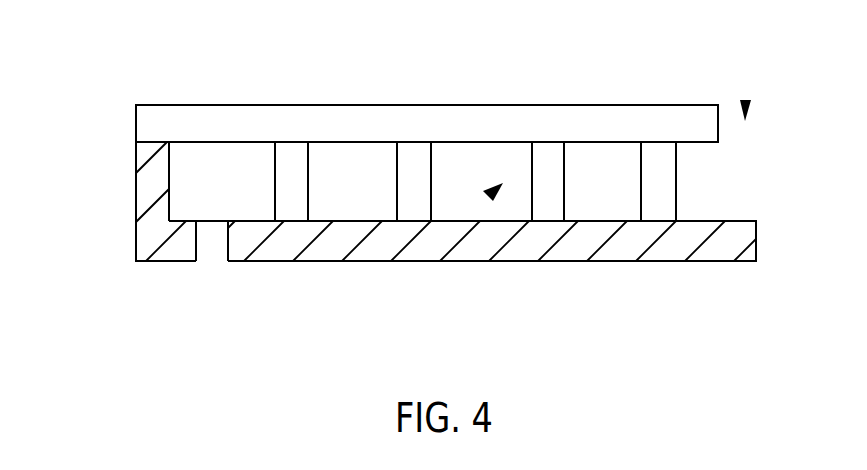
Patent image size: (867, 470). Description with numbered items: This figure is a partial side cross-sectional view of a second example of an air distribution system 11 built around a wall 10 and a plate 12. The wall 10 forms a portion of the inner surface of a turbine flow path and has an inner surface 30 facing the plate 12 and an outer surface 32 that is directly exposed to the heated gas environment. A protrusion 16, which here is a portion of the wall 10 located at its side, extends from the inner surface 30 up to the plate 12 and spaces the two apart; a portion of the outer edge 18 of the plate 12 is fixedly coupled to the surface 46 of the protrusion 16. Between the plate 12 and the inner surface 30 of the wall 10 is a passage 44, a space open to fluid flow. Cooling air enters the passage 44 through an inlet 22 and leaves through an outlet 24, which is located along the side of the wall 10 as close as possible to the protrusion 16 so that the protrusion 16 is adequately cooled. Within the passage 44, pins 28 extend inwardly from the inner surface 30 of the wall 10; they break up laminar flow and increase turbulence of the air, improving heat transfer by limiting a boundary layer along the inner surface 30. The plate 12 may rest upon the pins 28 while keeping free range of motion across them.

The wall 10 is at (662, 250).
The air distribution system 11 is at (178, 325).
The plate 12 is at (293, 105).
The protrusion 16 is at (150, 192).
The outer edge 18 is at (717, 127).
The inlet 22 is at (746, 102).
The outlet 24 is at (214, 264).
The pin 28 is at (414, 203).
The inner surface 30 is at (747, 220).
The outer surface 32 is at (732, 262).
The passage 44 is at (487, 198).
The surface 46 is at (160, 142).